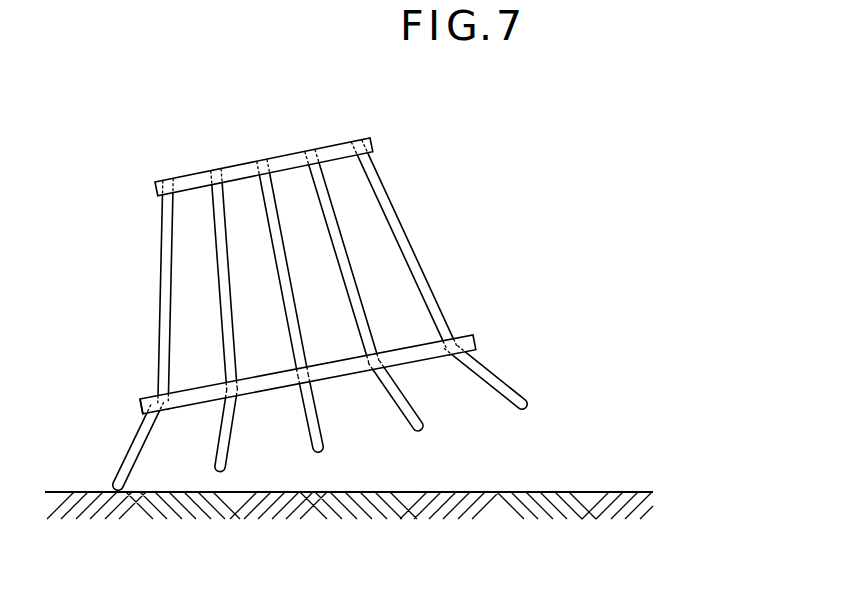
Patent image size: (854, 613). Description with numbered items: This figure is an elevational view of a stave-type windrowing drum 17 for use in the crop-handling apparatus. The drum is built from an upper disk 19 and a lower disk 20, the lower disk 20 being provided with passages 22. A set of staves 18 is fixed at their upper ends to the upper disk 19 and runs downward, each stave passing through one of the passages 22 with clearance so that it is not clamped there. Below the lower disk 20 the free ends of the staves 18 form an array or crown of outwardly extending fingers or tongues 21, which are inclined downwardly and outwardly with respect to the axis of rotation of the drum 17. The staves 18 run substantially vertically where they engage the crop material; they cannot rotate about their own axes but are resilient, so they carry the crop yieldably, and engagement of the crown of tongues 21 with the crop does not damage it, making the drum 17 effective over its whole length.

The windrowing drum 17 is at (308, 289).
The staves 18 is at (223, 309).
The upper disk 19 is at (286, 158).
The lower disk 20 is at (475, 343).
The tongues 21 is at (503, 397).
The passages 22 is at (142, 412).